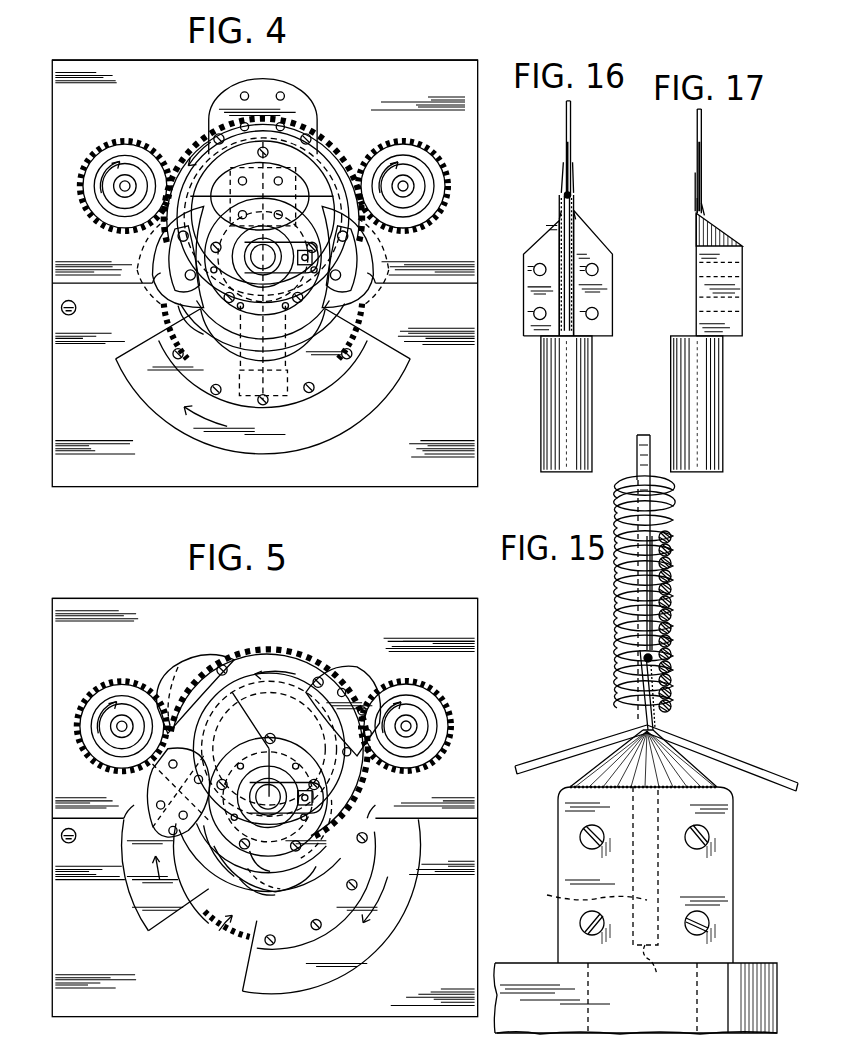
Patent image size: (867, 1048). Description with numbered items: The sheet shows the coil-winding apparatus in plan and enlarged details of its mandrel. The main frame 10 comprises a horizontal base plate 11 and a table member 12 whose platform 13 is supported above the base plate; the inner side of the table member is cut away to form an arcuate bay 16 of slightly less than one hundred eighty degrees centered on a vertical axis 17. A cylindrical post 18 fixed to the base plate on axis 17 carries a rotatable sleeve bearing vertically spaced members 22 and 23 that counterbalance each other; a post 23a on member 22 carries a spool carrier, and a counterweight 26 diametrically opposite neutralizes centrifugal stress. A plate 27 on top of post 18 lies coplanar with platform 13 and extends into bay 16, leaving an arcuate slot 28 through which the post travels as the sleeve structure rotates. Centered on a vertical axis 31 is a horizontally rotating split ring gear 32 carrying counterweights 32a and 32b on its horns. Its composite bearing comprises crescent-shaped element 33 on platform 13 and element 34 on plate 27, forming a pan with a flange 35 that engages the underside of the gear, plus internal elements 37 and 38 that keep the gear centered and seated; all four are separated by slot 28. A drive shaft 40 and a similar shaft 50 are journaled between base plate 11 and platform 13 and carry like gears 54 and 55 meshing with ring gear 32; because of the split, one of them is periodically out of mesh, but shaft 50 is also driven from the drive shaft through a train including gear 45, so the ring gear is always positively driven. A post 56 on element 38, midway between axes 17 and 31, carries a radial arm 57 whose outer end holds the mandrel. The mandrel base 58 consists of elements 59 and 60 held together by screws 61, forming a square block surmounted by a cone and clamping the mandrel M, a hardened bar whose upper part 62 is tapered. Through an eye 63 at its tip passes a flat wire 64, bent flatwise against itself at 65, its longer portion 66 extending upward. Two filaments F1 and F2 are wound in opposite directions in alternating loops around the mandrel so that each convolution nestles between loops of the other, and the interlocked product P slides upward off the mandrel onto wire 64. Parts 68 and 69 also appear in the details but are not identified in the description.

In FIG. 4, the main frame 10 is at (50, 370).
In FIG. 5, the main frame 10 is at (50, 903).
In FIG. 4, the base plate 11 is at (68, 410).
In FIG. 5, the base plate 11 is at (73, 933).
In FIG. 4, the table member 12 is at (322, 59).
In FIG. 5, the table member 12 is at (305, 598).
In FIG. 4, the platform 13 is at (413, 78).
In FIG. 5, the platform 13 is at (385, 617).
In FIG. 4, the arcuate bay 16 is at (152, 285).
In FIG. 5, the arcuate bay 16 is at (360, 813).
In FIG. 5, the vertical axis 17 is at (293, 860).
In FIG. 4, the cylindrical post 18 is at (285, 302).
In FIG. 4, the upper member 22 is at (350, 402).
In FIG. 5, the upper member 22 is at (377, 910).
In FIG. 4, the lower member 23 is at (380, 263).
In FIG. 5, the lower member 23 is at (133, 853).
In FIG. 5, the post 23a is at (152, 825).
In FIG. 4, the counterweight 26 is at (295, 390).
In FIG. 5, the counterweight 26 is at (293, 930).
In FIG. 4, the plate 27 is at (258, 335).
In FIG. 5, the plate 27 is at (267, 870).
In FIG. 4, the arcuate slot 28 is at (366, 278).
In FIG. 5, the arcuate slot 28 is at (287, 730).
In FIG. 4, the vertical axis 31 is at (258, 215).
In FIG. 5, the vertical axis 31 is at (232, 745).
In FIG. 4, the split ring gear 32 is at (327, 152).
In FIG. 5, the split ring gear 32 is at (290, 662).
In FIG. 4, the counterweight 32a is at (160, 269).
In FIG. 5, the counterweight 32a is at (175, 672).
In FIG. 4, the counterweight 32b is at (365, 295).
In FIG. 5, the counterweight 32b is at (227, 853).
In FIG. 4, the external bearing element 33 is at (338, 166).
In FIG. 5, the external bearing element 33 is at (254, 648).
In FIG. 4, the external bearing element 34 is at (242, 323).
In FIG. 4, the flange 35 is at (258, 366).
In FIG. 4, the internal bearing element 37 is at (300, 150).
In FIG. 5, the internal bearing element 37 is at (285, 692).
In FIG. 4, the internal bearing element 38 is at (178, 293).
In FIG. 5, the internal bearing element 38 is at (242, 770).
In FIG. 4, the drive shaft 40 is at (425, 192).
In FIG. 5, the drive shaft 40 is at (418, 726).
In FIG. 4, the gear 45 is at (168, 318).
In FIG. 5, the gear 45 is at (226, 923).
In FIG. 4, the shaft 50 is at (123, 183).
In FIG. 5, the shaft 50 is at (117, 723).
In FIG. 4, the gear 54 is at (448, 175).
In FIG. 5, the gear 54 is at (447, 704).
In FIG. 4, the gear 55 is at (78, 181).
In FIG. 5, the gear 55 is at (80, 720).
In FIG. 5, the post 56 is at (220, 840).
In FIG. 5, the radial arm 57 is at (303, 828).
In FIG. 15, the radial arm 57 is at (745, 980).
In FIG. 4, the mandrel base 58 is at (306, 256).
In FIG. 5, the mandrel base 58 is at (307, 794).
In FIG. 15, the mandrel base 58 is at (712, 877).
In FIG. 16, the base element 59 is at (600, 290).
In FIG. 17, the base element 59 is at (735, 295).
In FIG. 15, the base element 60 is at (575, 865).
In FIG. 15, the screws 61 is at (580, 838).
In FIG. 16, the upper part of mandrel 62 is at (575, 201).
In FIG. 17, the upper part of mandrel 62 is at (700, 200).
In FIG. 15, the upper part of mandrel 62 is at (656, 689).
In FIG. 16, the eye 63 is at (568, 190).
In FIG. 15, the eye 63 is at (652, 660).
In FIG. 16, the flat wire 64 is at (565, 153).
In FIG. 17, the flat wire 64 is at (699, 143).
In FIG. 15, the flat wire 64 is at (647, 450).
In FIG. 16, the bend 65 is at (562, 170).
In FIG. 17, the bend 65 is at (690, 171).
In FIG. 15, the bend 65 is at (625, 605).
In FIG. 16, the longer portion of wire 66 is at (569, 126).
In FIG. 17, the longer portion of wire 66 is at (697, 123).
In FIG. 15, the longer portion of wire 66 is at (640, 467).
In FIG. 16, the tube 68 is at (545, 328).
In FIG. 17, the tube 68 is at (690, 326).
In FIG. 15, the tube 68 is at (637, 970).
In FIG. 16, the needle tip chamfer 69 is at (575, 215).
In FIG. 17, the needle tip chamfer 69 is at (703, 216).
In FIG. 15, the needle tip chamfer 69 is at (660, 710).
In FIG. 16, the mandrel M is at (558, 193).
In FIG. 17, the mandrel M is at (690, 195).
In FIG. 15, the mandrel M is at (640, 690).
In FIG. 15, the product P is at (678, 510).
In FIG. 15, the coil-forming filament F1 is at (672, 610).
In FIG. 15, the coil-forming filament F2 is at (620, 640).